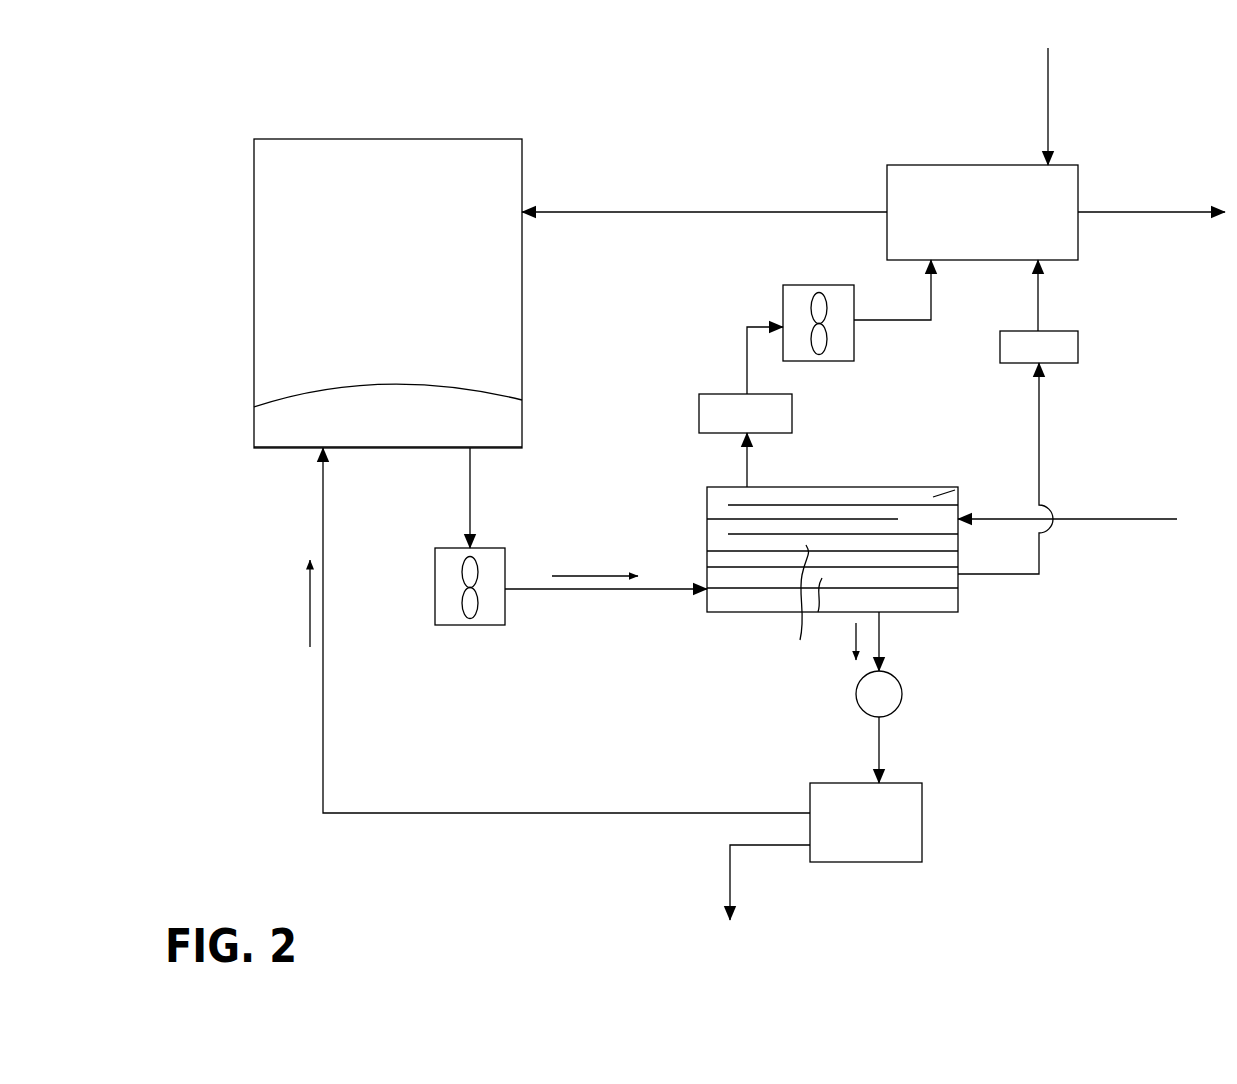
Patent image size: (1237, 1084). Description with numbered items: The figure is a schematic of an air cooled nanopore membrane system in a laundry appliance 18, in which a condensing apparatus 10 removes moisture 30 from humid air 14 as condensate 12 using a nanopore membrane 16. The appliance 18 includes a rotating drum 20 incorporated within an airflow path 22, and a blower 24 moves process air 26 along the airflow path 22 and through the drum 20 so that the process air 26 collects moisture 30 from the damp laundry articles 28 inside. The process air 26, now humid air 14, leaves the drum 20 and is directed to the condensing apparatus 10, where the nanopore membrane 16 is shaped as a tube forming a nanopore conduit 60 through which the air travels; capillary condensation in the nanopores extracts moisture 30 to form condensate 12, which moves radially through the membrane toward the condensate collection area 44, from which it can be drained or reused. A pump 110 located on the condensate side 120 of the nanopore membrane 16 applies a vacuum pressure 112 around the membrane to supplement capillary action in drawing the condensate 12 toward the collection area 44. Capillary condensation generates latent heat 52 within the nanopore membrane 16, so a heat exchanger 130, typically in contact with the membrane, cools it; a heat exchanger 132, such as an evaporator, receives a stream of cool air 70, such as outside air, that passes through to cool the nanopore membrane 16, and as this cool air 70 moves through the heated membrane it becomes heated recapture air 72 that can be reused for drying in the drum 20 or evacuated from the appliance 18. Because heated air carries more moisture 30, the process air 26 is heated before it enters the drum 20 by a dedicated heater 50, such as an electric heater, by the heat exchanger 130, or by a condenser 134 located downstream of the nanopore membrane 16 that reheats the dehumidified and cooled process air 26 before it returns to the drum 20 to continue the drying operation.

The condensing apparatus 10 is at (876, 552).
The condensate 12 is at (310, 617).
The humid air 14 is at (598, 574).
The nanopore membrane 16 is at (930, 590).
The laundry appliance 18 is at (686, 113).
The rotating drum 20 is at (380, 165).
The airflow path 22 is at (562, 593).
The blower 24 is at (435, 610).
The process air 26 is at (1040, 457).
The laundry articles 28 is at (313, 410).
The moisture 30 is at (465, 387).
The condensate collection area 44 is at (898, 863).
The heater 50 is at (797, 412).
The heat 52 is at (800, 640).
The nanopore conduit 60 is at (937, 580).
The cool air 70 is at (1103, 519).
The heated recapture air 72 is at (755, 322).
The pump 110 is at (896, 714).
The vacuum pressure 112 is at (705, 551).
The condensate side 120 is at (932, 619).
The heat exchanger 130 is at (907, 470).
The heat exchanger 132 is at (932, 497).
The condenser 134 is at (699, 420).